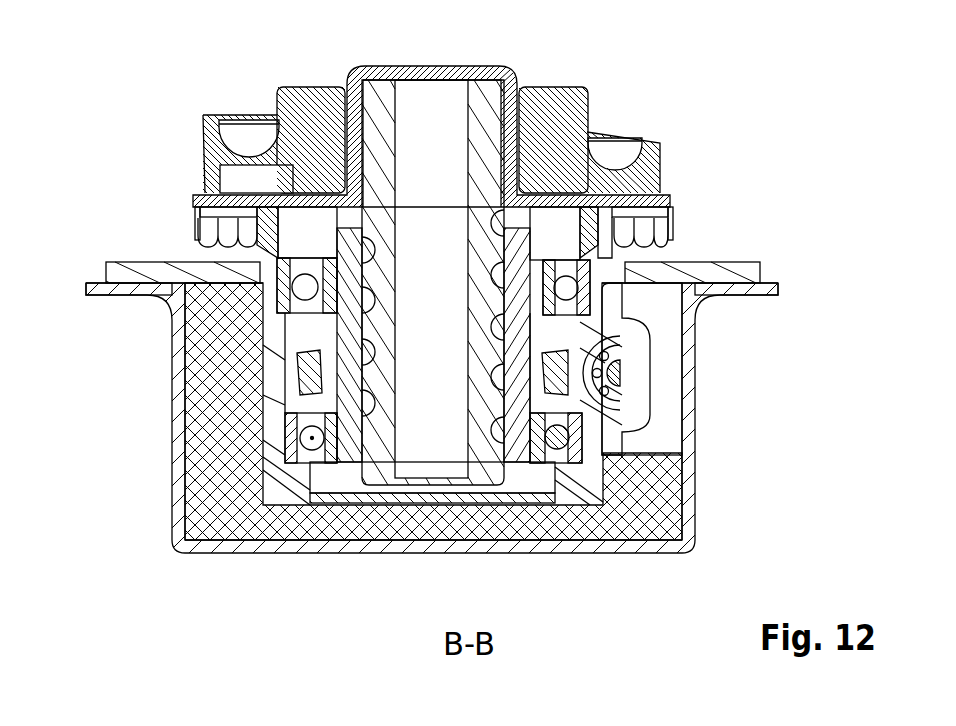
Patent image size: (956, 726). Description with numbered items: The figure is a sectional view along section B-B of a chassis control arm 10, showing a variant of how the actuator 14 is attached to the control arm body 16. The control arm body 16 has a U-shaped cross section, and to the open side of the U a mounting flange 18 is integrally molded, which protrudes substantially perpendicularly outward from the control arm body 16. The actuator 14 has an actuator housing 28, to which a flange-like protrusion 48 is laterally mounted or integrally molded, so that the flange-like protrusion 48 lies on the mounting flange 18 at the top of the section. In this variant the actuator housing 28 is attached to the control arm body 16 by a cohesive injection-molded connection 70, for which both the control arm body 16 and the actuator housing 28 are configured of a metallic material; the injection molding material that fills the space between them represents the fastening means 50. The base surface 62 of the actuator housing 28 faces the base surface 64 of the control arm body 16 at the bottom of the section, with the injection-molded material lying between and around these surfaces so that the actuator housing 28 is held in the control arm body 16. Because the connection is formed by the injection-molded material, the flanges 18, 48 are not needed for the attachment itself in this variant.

The chassis control arm 10 is at (84, 90).
The actuator 14 is at (724, 88).
The control arm body 16 is at (432, 457).
The mounting flange 18 is at (118, 297).
The actuator housing 28 is at (273, 396).
The flange-like protrusion 48 is at (178, 270).
The fastening means 50 is at (433, 457).
The cohesive injection-molded connection 70 is at (376, 522).
The base surface of the actuator housing 62 is at (527, 500).
The base surface of the control arm body 64 is at (268, 548).